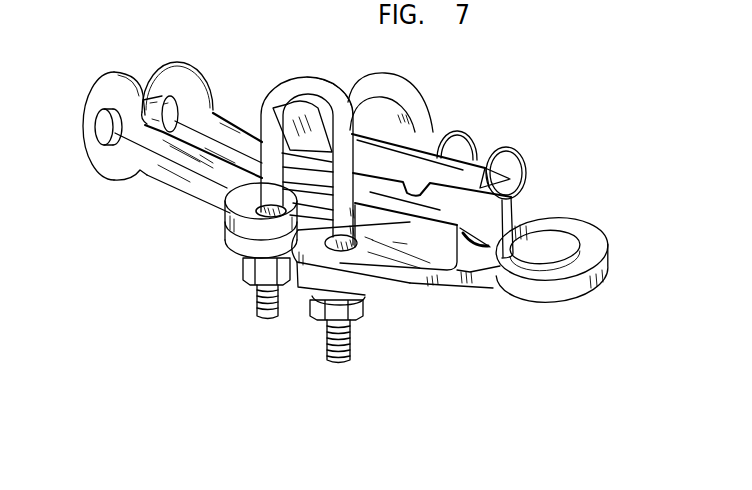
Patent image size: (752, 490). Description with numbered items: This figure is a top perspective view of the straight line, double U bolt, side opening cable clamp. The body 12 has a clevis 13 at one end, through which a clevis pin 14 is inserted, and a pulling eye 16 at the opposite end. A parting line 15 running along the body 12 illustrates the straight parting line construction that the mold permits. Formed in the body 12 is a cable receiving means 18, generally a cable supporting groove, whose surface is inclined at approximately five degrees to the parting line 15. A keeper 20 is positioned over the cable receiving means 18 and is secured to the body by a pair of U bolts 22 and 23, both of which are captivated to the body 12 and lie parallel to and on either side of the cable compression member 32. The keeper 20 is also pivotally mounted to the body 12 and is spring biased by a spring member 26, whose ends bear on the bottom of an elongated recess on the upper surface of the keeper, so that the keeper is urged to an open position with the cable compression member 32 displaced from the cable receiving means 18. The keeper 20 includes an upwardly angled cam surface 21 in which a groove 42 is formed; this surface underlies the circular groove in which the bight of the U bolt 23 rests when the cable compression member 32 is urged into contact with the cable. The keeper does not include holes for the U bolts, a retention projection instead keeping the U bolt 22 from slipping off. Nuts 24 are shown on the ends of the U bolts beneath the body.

The body 12 is at (192, 200).
The clevis 13 is at (147, 85).
The clevis pin 14 is at (94, 132).
The parting line 15 is at (211, 118).
The pulling eye 16 is at (577, 245).
The cable receiving means 18 is at (488, 248).
The keeper 20 is at (438, 148).
The cam surface 21 is at (270, 117).
The U bolt 22 is at (417, 88).
The U bolt 23 is at (329, 85).
The nut and stud 24 is at (357, 307).
The spring member 26 is at (522, 155).
The cable compression member 32 is at (504, 178).
The groove 42 is at (300, 114).